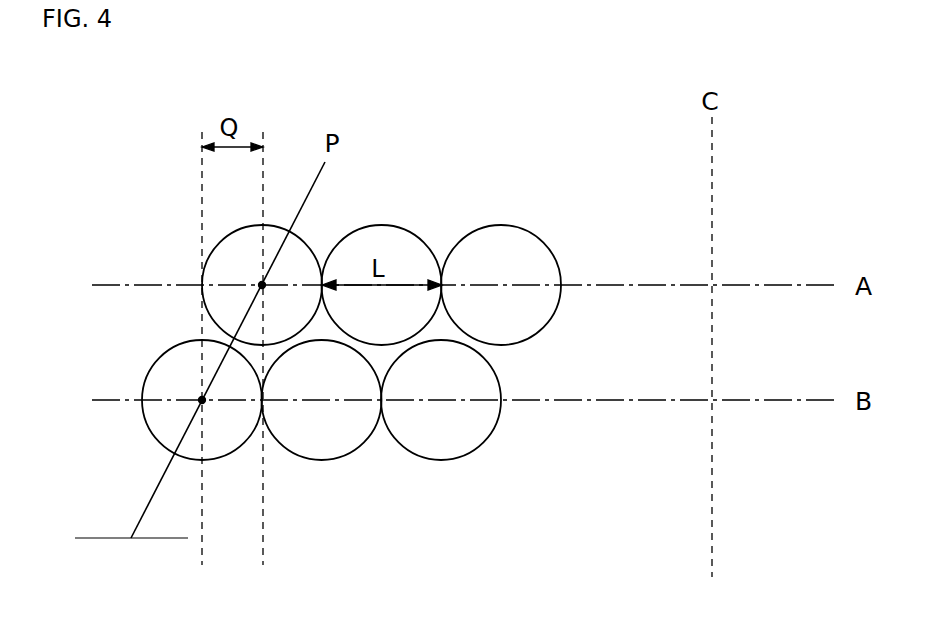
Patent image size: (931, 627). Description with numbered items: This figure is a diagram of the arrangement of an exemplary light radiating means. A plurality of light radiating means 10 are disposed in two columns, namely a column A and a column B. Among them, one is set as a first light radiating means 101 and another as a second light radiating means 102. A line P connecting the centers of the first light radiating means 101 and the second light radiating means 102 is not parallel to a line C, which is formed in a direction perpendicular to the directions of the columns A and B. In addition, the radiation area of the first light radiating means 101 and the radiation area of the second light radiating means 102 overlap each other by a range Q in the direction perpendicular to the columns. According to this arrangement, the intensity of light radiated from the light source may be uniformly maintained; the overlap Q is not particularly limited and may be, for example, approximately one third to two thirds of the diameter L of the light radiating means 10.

The light radiating means 10 is at (518, 320).
The first light radiating means 101 is at (227, 260).
The second light radiating means 102 is at (167, 372).